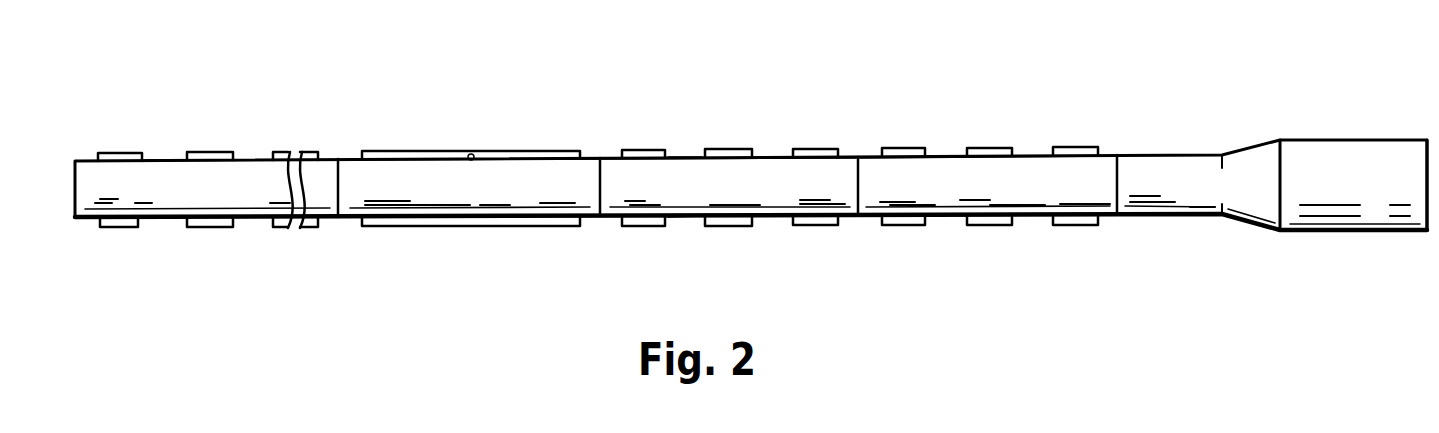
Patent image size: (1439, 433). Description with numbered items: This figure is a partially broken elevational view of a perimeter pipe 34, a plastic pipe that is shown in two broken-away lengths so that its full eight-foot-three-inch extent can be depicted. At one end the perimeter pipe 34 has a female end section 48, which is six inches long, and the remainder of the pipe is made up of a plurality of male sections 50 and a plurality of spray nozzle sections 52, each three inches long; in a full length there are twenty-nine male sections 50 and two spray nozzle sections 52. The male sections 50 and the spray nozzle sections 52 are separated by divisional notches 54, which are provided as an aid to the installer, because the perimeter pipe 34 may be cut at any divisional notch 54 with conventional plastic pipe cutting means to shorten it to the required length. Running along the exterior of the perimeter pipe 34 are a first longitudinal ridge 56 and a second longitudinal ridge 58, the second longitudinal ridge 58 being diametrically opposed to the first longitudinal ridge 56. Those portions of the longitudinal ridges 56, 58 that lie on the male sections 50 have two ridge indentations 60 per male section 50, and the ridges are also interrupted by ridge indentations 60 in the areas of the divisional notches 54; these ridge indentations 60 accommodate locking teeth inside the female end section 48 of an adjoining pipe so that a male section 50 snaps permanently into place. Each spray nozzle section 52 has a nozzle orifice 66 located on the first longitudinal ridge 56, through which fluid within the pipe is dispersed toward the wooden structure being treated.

The perimeter pipe 34 is at (180, 68).
The female end section 48 is at (1320, 167).
The male section 50 is at (220, 185).
The spray nozzle section 52 is at (447, 195).
The divisional notch 54 is at (340, 220).
The first longitudinal ridge 56 is at (125, 155).
The second longitudinal ridge 58 is at (100, 227).
The ridge indentation 60 is at (163, 157).
The nozzle orifice 66 is at (472, 156).